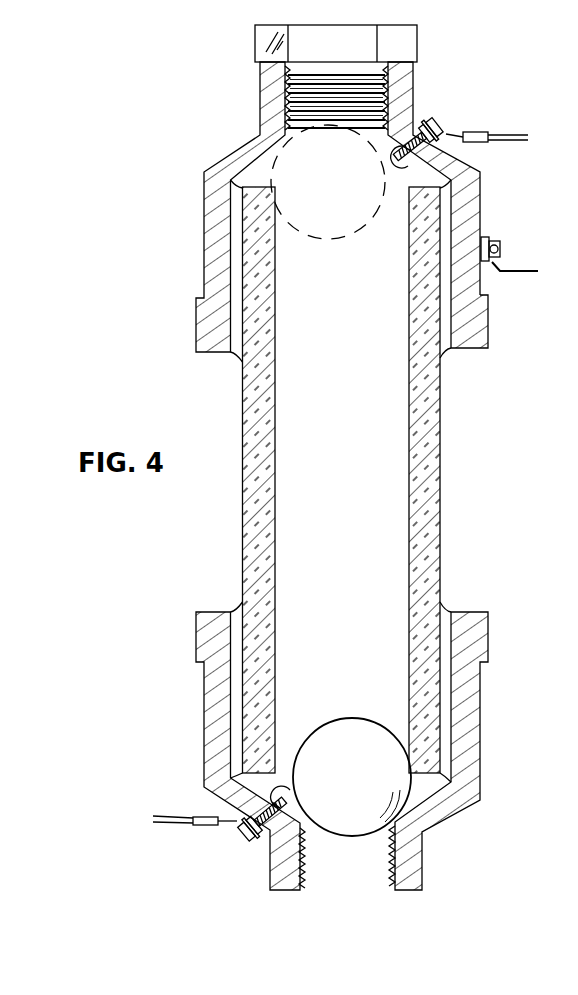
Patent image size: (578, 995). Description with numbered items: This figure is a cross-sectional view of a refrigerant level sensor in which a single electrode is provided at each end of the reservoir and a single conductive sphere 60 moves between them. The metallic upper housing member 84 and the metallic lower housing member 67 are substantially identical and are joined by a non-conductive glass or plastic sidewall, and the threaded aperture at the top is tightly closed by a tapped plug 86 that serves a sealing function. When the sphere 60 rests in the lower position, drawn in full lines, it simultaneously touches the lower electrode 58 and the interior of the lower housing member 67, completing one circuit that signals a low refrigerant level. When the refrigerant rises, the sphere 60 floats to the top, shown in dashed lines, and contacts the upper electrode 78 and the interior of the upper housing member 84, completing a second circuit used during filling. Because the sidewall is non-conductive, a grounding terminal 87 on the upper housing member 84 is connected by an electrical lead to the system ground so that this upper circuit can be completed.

The tapped plug 86 is at (408, 38).
The upper electrode 78 is at (460, 186).
The grounding terminal 87 is at (497, 243).
The upper housing member 84 is at (480, 322).
The lower housing member 67 is at (470, 727).
The conductive sphere 60 is at (345, 725).
The lower electrode 58 is at (238, 772).